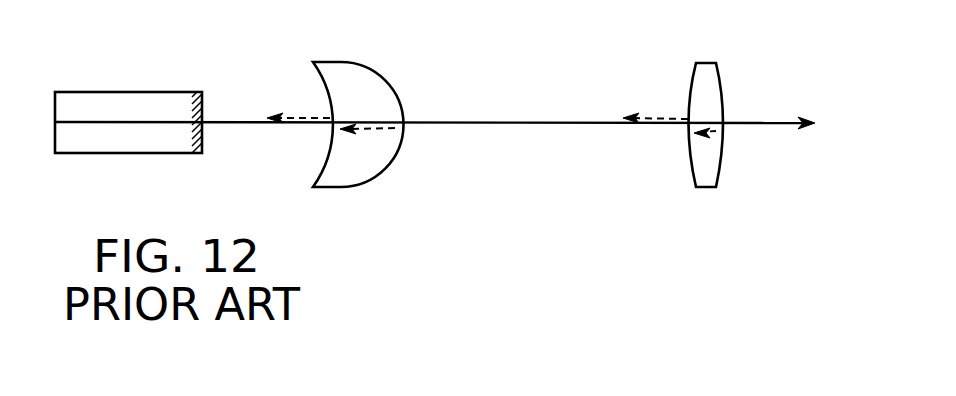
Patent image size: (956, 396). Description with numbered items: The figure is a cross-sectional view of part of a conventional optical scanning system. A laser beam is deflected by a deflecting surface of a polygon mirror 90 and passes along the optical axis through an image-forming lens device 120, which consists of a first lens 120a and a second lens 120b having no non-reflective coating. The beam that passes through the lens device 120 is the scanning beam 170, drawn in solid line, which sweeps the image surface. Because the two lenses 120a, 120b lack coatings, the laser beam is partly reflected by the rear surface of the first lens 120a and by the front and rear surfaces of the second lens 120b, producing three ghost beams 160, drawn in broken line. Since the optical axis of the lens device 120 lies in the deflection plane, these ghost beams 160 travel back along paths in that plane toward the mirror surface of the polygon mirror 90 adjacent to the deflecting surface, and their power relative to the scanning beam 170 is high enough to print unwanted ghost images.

The polygon mirror 90 is at (155, 100).
The image-forming lens device 120 is at (518, 187).
The first lens 120a is at (352, 167).
The second lens 120b is at (700, 165).
The ghost beams 160 is at (311, 118).
The scanning beam 170 is at (789, 121).